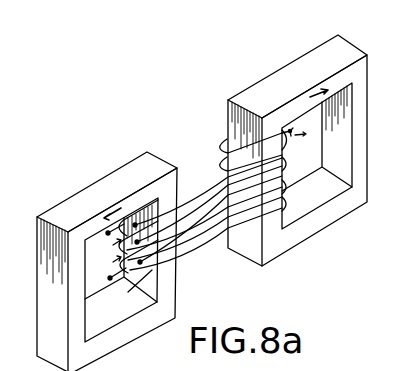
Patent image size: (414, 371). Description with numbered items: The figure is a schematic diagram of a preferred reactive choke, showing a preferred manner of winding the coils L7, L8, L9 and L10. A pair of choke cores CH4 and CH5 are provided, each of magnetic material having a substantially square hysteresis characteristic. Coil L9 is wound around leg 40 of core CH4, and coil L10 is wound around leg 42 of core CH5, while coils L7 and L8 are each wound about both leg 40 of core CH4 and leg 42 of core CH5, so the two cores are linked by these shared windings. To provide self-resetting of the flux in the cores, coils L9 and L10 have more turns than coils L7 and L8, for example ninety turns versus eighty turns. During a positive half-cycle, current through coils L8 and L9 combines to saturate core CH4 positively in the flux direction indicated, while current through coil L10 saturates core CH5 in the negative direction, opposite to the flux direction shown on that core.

The leg 40 is at (168, 283).
The leg 42 is at (235, 127).
The choke core CH4 is at (92, 190).
The choke core CH5 is at (275, 82).
The coil L7 is at (107, 270).
The coil L8 is at (127, 296).
The coil L9 is at (106, 243).
The coil L10 is at (302, 147).